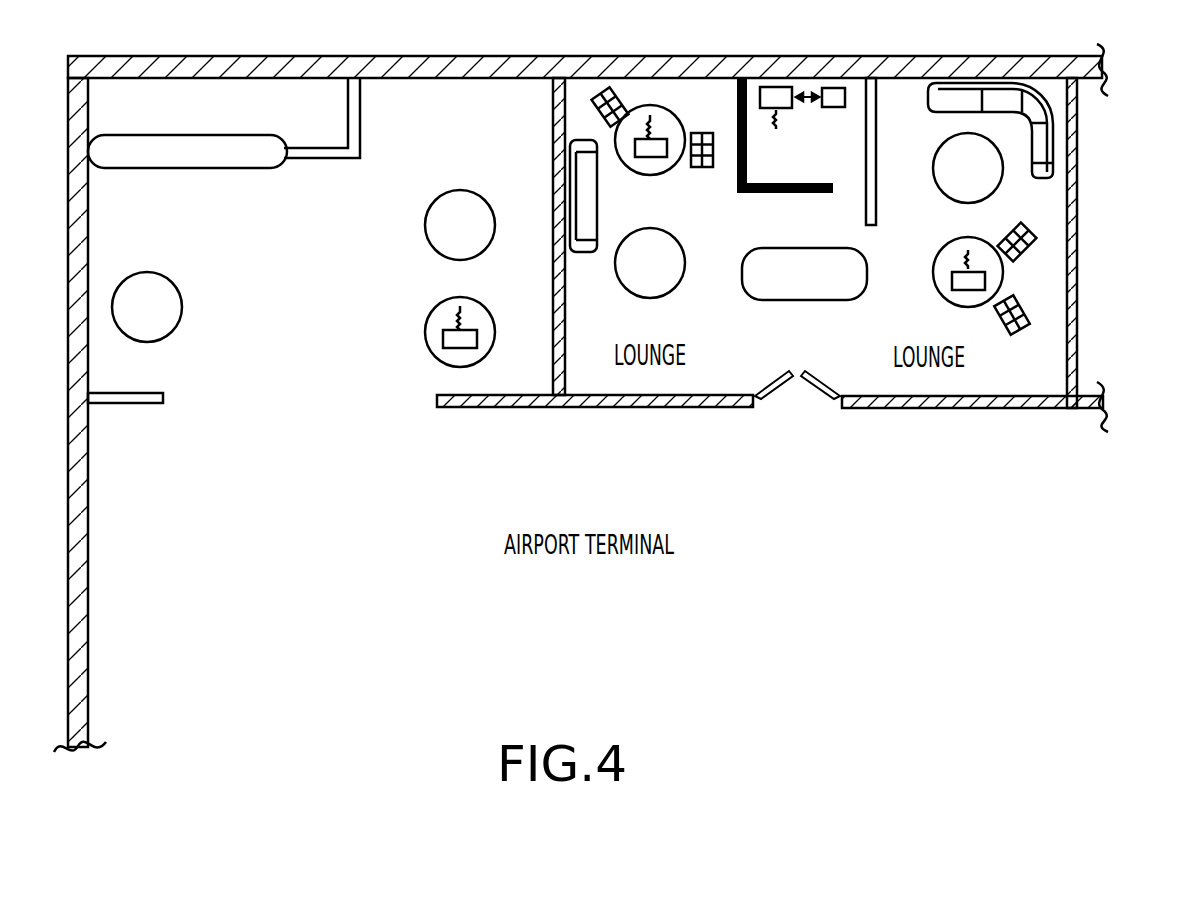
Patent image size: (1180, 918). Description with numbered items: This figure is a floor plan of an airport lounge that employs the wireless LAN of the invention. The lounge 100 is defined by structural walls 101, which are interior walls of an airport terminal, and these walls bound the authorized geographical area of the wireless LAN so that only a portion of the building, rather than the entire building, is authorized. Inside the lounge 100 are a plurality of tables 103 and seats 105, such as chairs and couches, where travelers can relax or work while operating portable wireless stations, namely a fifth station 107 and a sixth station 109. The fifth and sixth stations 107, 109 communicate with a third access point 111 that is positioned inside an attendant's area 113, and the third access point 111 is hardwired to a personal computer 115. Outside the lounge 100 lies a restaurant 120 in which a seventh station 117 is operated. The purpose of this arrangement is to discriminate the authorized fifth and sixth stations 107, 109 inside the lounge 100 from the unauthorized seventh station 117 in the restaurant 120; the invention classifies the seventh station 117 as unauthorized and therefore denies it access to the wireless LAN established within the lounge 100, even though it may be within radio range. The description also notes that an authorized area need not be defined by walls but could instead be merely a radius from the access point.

The lounge 100 is at (816, 338).
The structural walls 101 is at (551, 147).
The tables 103 is at (627, 278).
The seats 105 is at (586, 190).
The fifth station 107 is at (664, 152).
The sixth station 109 is at (955, 280).
The third access point 111 is at (775, 87).
The attendant's area 113 is at (788, 168).
The personal computer 115 is at (835, 88).
The seventh station 117 is at (447, 340).
The restaurant 120 is at (265, 288).